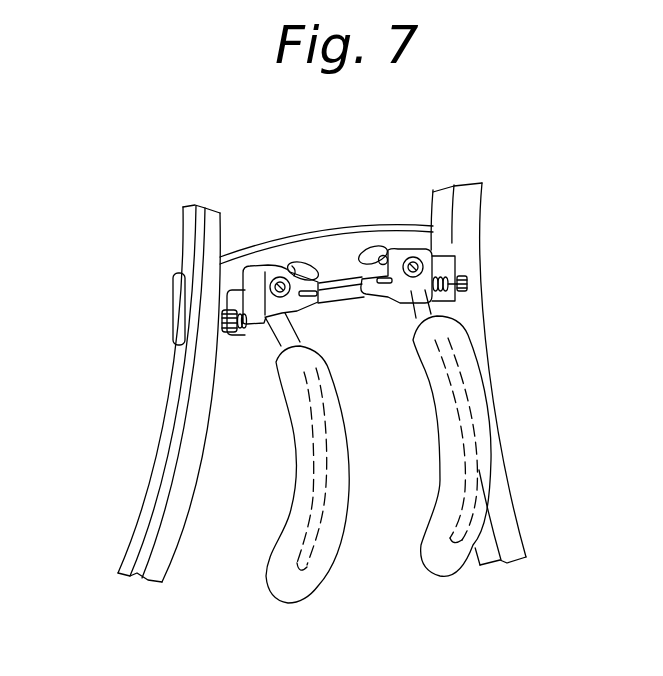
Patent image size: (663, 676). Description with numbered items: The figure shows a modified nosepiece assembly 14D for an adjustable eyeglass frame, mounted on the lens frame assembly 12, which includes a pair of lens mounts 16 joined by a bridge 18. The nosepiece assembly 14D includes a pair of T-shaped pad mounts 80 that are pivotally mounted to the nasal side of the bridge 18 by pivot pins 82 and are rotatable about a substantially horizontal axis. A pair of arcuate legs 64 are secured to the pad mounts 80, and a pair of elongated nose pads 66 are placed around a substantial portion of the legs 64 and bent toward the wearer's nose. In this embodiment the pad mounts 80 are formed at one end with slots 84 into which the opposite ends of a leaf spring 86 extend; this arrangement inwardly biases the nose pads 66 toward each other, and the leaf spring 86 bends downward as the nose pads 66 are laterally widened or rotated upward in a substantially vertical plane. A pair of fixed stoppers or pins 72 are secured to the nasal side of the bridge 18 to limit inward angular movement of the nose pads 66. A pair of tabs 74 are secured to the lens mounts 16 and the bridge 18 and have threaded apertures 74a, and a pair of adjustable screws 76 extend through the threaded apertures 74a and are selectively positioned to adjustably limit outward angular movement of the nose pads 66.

The lens frame assembly 12 is at (128, 434).
The nosepiece assembly 14D is at (367, 563).
The lens mounts 16 is at (185, 228).
The bridge 18 is at (332, 230).
The arcuate legs 64 is at (466, 315).
The nose pads 66 is at (279, 568).
The fixed stoppers or pins 72 is at (298, 262).
The tabs 74 is at (245, 289).
The threaded apertures 74a is at (235, 348).
The adjustable screws 76 is at (222, 322).
The T-shaped pad mounts 80 is at (265, 265).
The pivot pins 82 is at (278, 277).
The slots 84 is at (312, 298).
The leaf spring 86 is at (357, 290).